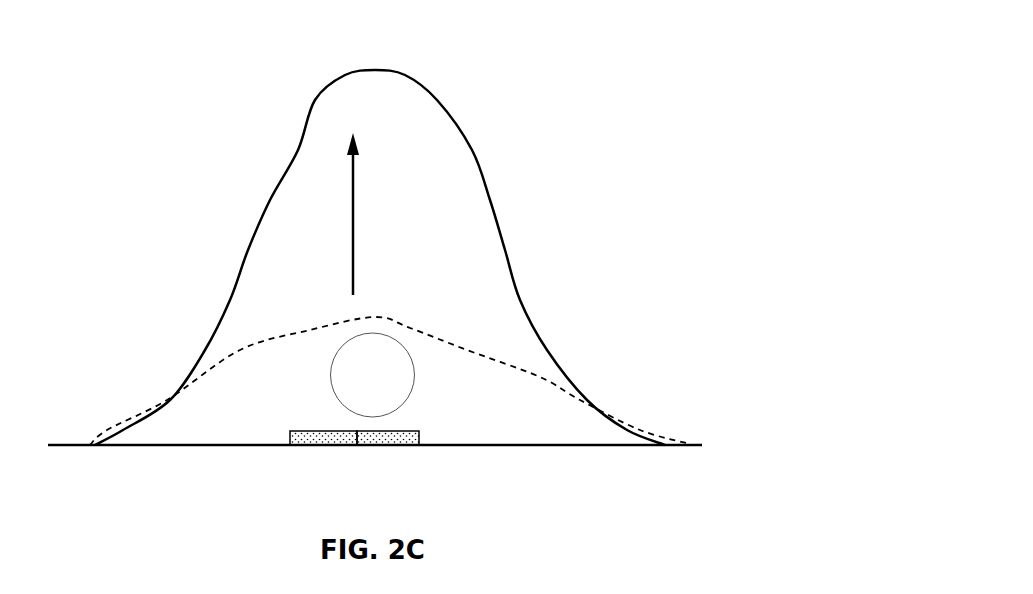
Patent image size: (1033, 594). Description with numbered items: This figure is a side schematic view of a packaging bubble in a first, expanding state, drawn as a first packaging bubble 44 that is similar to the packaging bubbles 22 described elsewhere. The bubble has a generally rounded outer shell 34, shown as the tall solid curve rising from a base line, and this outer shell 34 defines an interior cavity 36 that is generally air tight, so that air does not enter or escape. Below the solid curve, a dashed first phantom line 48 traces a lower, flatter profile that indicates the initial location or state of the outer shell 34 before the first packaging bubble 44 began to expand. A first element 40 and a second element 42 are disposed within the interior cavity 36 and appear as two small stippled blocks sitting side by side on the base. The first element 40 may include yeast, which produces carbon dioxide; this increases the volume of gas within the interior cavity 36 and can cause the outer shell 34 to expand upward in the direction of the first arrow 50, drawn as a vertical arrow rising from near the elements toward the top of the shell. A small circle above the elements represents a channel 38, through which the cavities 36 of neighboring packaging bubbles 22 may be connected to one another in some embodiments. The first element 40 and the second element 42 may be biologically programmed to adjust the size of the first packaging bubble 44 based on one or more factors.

The packaging bubble 22 is at (399, 259).
The outer shell 34 is at (490, 198).
The interior cavity 36 is at (478, 265).
The channel 38 is at (426, 386).
The first element 40 is at (315, 447).
The second element 42 is at (388, 447).
The first packaging bubble 44 is at (185, 196).
The first phantom line 48 is at (233, 358).
The first arrow 50 is at (352, 190).